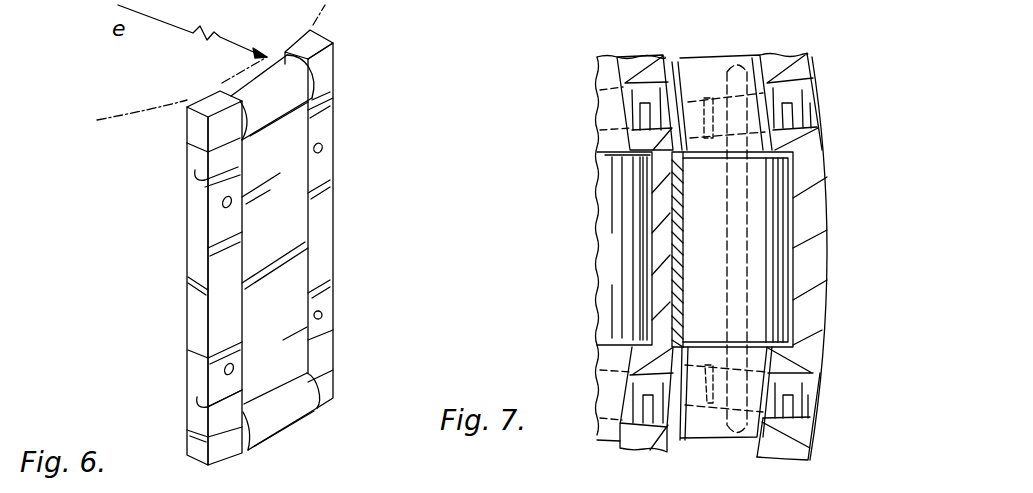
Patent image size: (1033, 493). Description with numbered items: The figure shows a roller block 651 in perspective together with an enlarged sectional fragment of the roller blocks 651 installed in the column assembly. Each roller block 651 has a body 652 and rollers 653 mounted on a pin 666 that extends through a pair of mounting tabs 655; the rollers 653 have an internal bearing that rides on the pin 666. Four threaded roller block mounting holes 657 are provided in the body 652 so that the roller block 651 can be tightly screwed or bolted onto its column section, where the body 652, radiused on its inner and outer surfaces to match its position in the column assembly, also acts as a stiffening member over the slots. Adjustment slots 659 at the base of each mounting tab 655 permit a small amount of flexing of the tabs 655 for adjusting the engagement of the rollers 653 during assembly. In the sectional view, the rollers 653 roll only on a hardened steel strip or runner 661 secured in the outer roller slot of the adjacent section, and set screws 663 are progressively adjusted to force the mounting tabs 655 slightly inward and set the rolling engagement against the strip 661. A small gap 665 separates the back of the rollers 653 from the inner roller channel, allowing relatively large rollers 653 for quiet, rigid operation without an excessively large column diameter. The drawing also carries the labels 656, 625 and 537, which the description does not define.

In FIG. 6, the roller block 651 is at (178, 250).
In FIG. 7, the roller block 651 is at (712, 418).
In FIG. 6, the body 652 is at (323, 267).
In FIG. 6, the rollers 653 is at (308, 90).
In FIG. 7, the rollers 653 is at (772, 267).
In FIG. 6, the mounting tabs 655 is at (328, 47).
In FIG. 6, the lower block 656 is at (328, 392).
In FIG. 6, the roller block mounting holes 657 is at (322, 315).
In FIG. 6, the adjustment slots 659 is at (328, 103).
In FIG. 7, the strip 661 is at (655, 166).
In FIG. 7, the set screws 663 is at (608, 202).
In FIG. 7, the gap 665 is at (793, 197).
In FIG. 7, the pin 666 is at (737, 63).
In FIG. 7, the insert 625 is at (773, 325).
In FIG. 7, the lower rail segment 537 is at (810, 437).